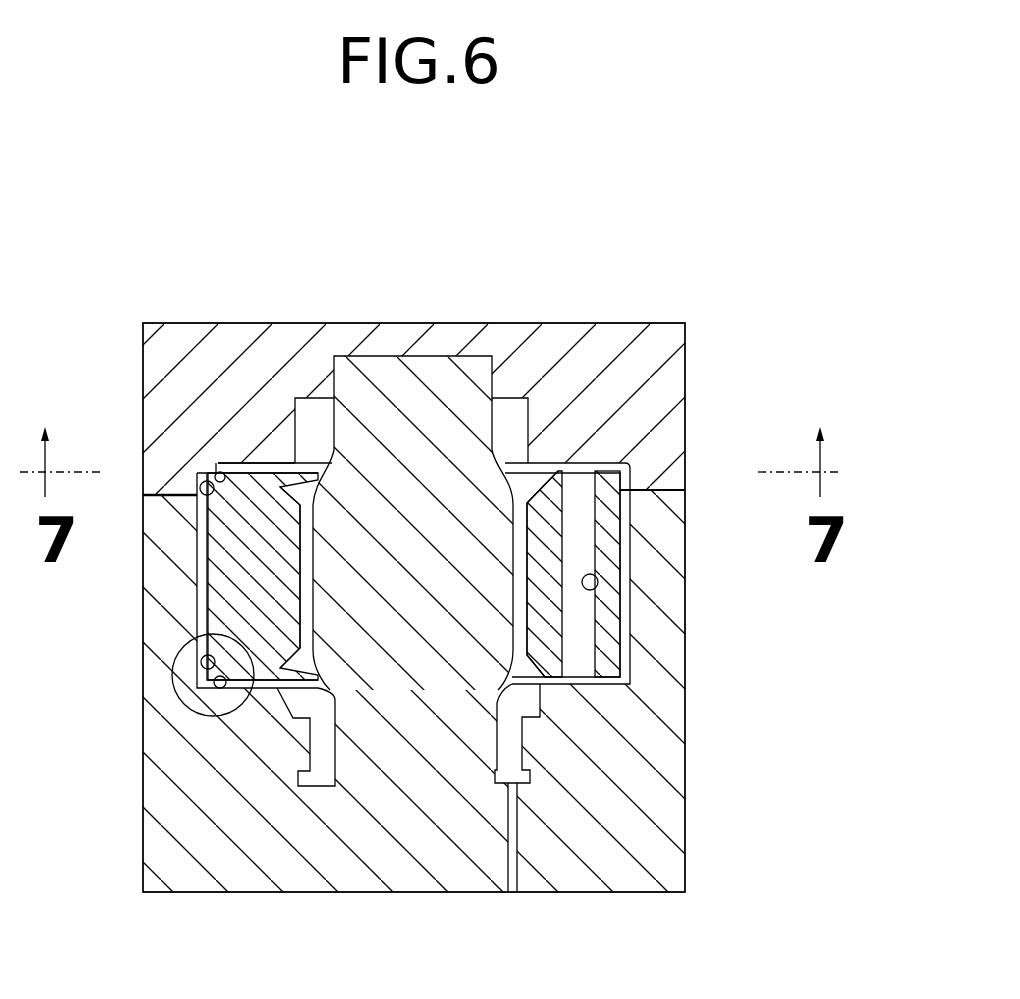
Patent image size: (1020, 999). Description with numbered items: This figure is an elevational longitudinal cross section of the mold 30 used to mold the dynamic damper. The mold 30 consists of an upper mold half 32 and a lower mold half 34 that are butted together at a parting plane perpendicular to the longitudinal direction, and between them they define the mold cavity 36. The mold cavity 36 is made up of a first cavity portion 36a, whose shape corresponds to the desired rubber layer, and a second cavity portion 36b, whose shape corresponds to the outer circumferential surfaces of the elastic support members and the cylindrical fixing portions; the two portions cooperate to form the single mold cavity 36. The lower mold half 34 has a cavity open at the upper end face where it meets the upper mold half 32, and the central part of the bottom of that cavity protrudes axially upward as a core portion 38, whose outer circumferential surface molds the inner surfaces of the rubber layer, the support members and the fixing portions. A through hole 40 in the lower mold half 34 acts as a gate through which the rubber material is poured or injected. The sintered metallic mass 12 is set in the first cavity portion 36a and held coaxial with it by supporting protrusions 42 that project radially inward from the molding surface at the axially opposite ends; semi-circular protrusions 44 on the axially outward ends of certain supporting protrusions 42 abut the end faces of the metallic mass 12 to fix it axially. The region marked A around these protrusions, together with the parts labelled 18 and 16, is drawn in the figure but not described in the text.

The mold 30 is at (640, 228).
The upper mold half 32 is at (668, 437).
The lower mold half 34 is at (667, 644).
The mold cavity 36 is at (540, 700).
The first cavity portion 36a is at (198, 573).
The second cavity portion 36b is at (285, 396).
The core portion 38 is at (398, 380).
The bearing 18 is at (540, 480).
The metallic mass 12 is at (608, 540).
The pin 16 is at (598, 592).
The supporting protrusions 42 is at (208, 493).
The semi-circular protrusions 44 is at (220, 462).
The through hole 40 is at (510, 880).
The detail region A is at (209, 732).